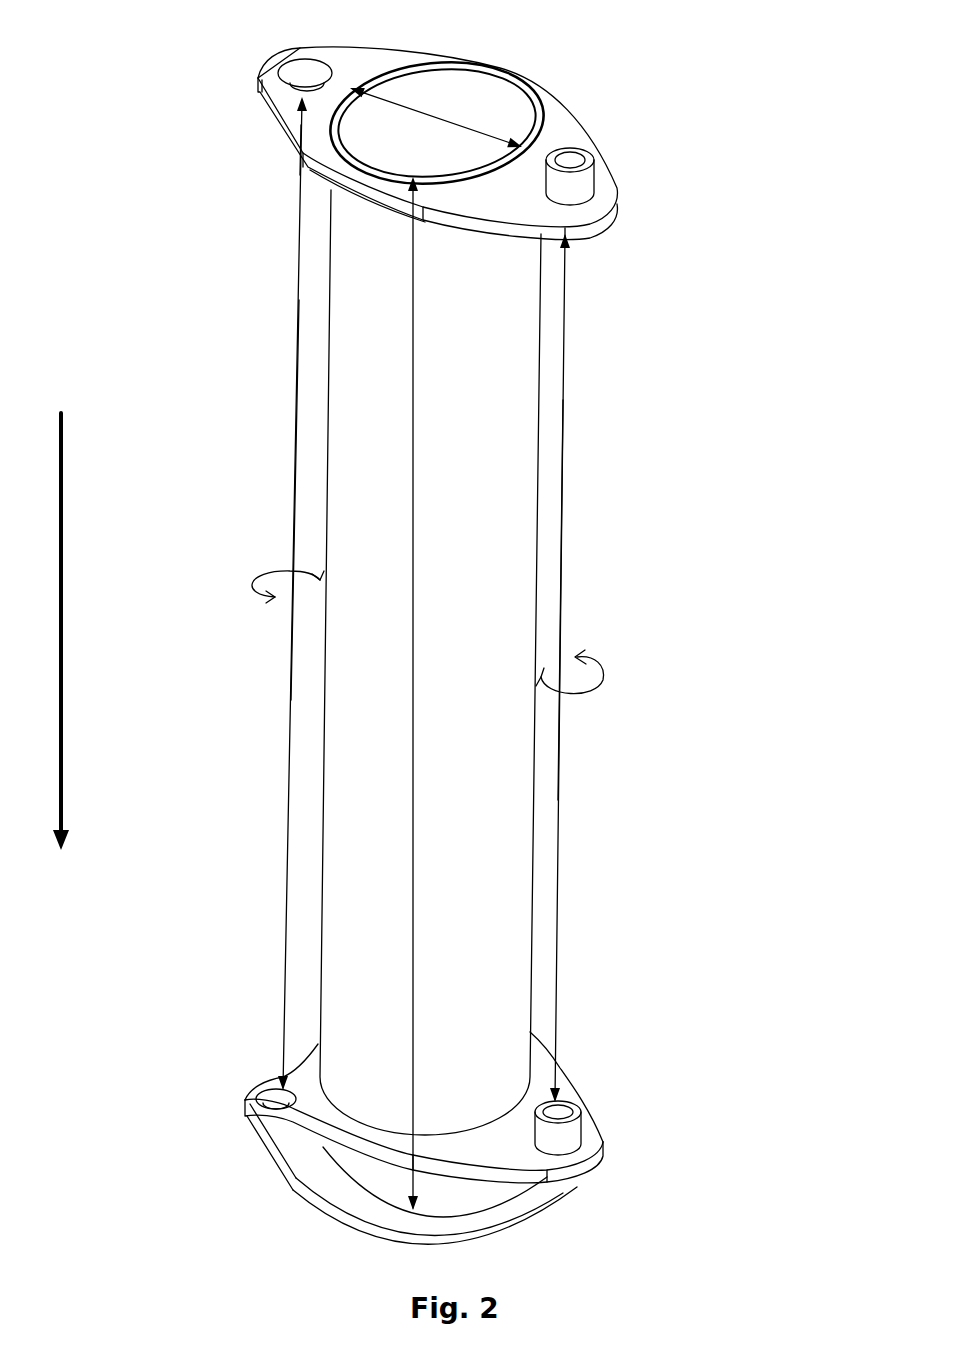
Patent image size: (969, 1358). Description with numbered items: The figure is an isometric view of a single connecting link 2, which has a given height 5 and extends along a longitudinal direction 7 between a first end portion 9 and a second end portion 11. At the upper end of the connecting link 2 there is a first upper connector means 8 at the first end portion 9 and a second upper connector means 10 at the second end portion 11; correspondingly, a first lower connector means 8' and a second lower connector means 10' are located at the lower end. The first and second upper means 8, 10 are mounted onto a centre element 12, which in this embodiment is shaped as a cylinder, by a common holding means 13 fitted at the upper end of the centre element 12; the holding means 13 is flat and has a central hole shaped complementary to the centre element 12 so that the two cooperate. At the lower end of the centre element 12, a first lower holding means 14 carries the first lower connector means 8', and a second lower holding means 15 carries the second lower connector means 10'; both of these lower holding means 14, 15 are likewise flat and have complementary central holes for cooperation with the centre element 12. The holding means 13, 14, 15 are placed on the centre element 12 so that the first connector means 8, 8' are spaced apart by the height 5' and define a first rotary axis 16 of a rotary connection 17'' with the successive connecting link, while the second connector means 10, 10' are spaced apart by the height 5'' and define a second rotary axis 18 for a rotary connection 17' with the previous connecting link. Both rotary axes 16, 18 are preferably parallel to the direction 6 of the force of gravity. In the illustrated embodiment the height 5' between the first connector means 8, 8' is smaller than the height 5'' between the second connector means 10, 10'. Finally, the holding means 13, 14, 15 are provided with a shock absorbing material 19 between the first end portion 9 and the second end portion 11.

The connecting link 2 is at (647, 599).
The height 5 is at (362, 693).
The height 5' is at (621, 600).
The height 5'' is at (238, 590).
The direction of the force of gravity 6 is at (63, 443).
The longitudinal direction 7 is at (470, 127).
The first upper connector means 8 is at (611, 230).
The first lower connector means 8' is at (643, 1105).
The first end portion 9 is at (626, 169).
The second upper connector means 10 is at (365, 49).
The second lower connector means 10' is at (227, 1050).
The second end portion 11 is at (246, 110).
The centre element 12 is at (485, 493).
The holding means 13 is at (300, 125).
The first lower holding means 14 is at (562, 1078).
The second lower holding means 15 is at (283, 1145).
The first rotary axis 16 is at (562, 852).
The rotary connection 17' is at (203, 562).
The rotary connection 17'' is at (680, 672).
The second rotary axis 18 is at (290, 745).
The shock absorbing material 19 is at (347, 203).